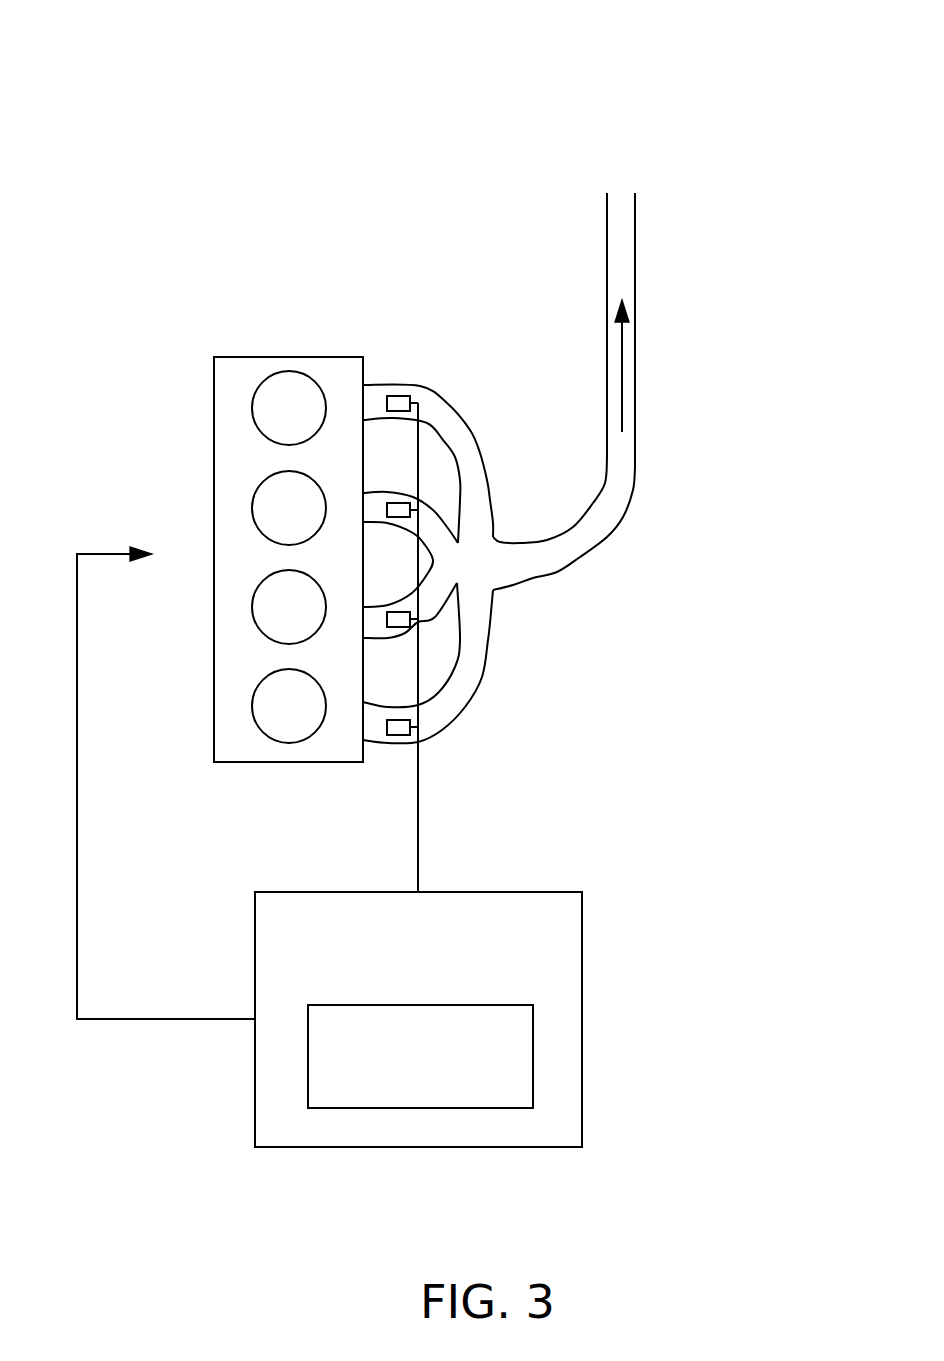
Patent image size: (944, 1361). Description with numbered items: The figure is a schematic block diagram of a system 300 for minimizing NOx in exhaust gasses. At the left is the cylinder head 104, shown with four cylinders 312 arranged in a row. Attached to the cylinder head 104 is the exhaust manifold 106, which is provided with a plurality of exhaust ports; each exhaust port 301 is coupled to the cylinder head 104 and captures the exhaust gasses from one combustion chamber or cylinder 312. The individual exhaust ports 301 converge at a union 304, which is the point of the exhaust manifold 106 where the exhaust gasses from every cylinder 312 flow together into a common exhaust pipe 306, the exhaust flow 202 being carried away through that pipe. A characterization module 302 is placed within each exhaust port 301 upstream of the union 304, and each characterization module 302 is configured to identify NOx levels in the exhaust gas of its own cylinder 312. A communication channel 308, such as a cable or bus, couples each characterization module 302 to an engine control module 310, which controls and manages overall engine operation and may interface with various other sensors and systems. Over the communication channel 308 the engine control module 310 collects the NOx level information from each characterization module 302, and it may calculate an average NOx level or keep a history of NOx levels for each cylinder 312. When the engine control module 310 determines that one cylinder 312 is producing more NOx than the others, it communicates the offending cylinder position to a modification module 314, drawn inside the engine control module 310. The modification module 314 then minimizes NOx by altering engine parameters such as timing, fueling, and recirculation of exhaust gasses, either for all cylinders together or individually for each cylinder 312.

The system 300 is at (128, 91).
The cylinder head 104 is at (260, 358).
The cylinder 312 is at (267, 420).
The exhaust manifold 106 is at (490, 487).
The exhaust port 301 is at (433, 507).
The characterization module 302 is at (399, 412).
The union 304 is at (502, 563).
The exhaust pipe 306 is at (612, 533).
The exhaust flow direction 202 is at (622, 380).
The communication channel 308 is at (420, 862).
The engine control module 310 is at (398, 958).
The modification module 314 is at (400, 1085).